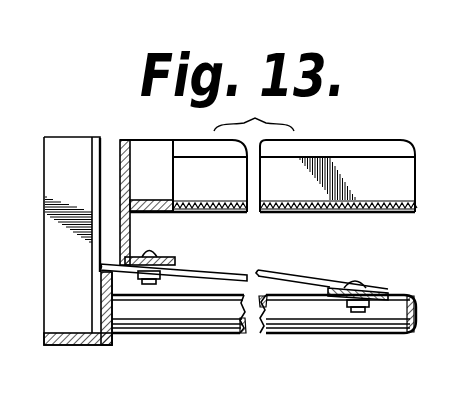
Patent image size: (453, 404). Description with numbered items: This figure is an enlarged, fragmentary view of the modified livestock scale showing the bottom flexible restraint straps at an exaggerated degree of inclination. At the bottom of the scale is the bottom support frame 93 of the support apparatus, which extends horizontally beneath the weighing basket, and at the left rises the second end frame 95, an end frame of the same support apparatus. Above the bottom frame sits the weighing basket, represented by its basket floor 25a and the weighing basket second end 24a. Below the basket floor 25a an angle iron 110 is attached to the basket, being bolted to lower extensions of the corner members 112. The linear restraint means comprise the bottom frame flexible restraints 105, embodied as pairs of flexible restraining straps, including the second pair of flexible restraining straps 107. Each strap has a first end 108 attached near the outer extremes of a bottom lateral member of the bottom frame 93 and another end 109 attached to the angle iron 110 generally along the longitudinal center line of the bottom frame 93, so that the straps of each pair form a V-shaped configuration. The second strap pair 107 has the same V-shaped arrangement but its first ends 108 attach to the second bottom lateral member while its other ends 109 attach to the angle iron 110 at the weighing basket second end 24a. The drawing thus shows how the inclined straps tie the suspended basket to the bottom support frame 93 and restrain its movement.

The bottom support frame 93 is at (182, 330).
The second end frame 95 is at (77, 144).
The bottom frame flexible restraints 105 is at (222, 261).
The second pair of flexible restraining straps 107 is at (289, 270).
The first end of strap 108 is at (385, 291).
The other end of strap 109 is at (100, 268).
The angle iron 110 is at (129, 163).
The corner members 112 is at (147, 143).
The weighing basket second end 24a is at (188, 176).
The basket floor 25a is at (394, 201).